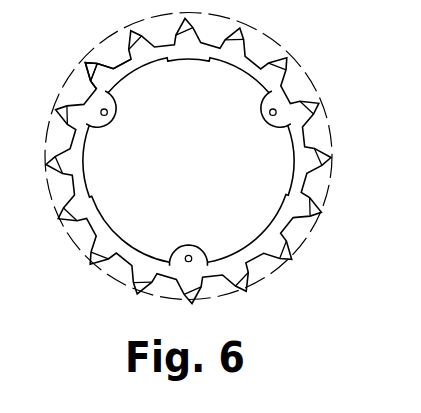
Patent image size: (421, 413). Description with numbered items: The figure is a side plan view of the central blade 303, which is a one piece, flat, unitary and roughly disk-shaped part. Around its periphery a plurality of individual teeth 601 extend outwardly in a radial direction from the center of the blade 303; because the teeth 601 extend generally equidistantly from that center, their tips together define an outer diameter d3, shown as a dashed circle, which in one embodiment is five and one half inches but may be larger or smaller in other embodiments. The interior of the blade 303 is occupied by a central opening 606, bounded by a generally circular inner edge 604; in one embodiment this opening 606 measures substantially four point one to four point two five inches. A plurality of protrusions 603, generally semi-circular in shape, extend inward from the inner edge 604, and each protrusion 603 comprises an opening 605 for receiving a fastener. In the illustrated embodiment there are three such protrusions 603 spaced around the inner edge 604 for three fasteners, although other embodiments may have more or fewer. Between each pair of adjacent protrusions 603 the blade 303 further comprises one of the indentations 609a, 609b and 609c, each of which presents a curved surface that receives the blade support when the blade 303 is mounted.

The blade 303 is at (297, 41).
The teeth 601 is at (102, 57).
The protrusions 603 is at (110, 128).
The inner edge 604 is at (137, 251).
The openings 605 is at (275, 110).
The central opening 606 is at (188, 160).
The indentation 609a is at (188, 60).
The indentation 609b is at (90, 199).
The indentation 609c is at (288, 200).
The outer diameter d3 is at (308, 241).